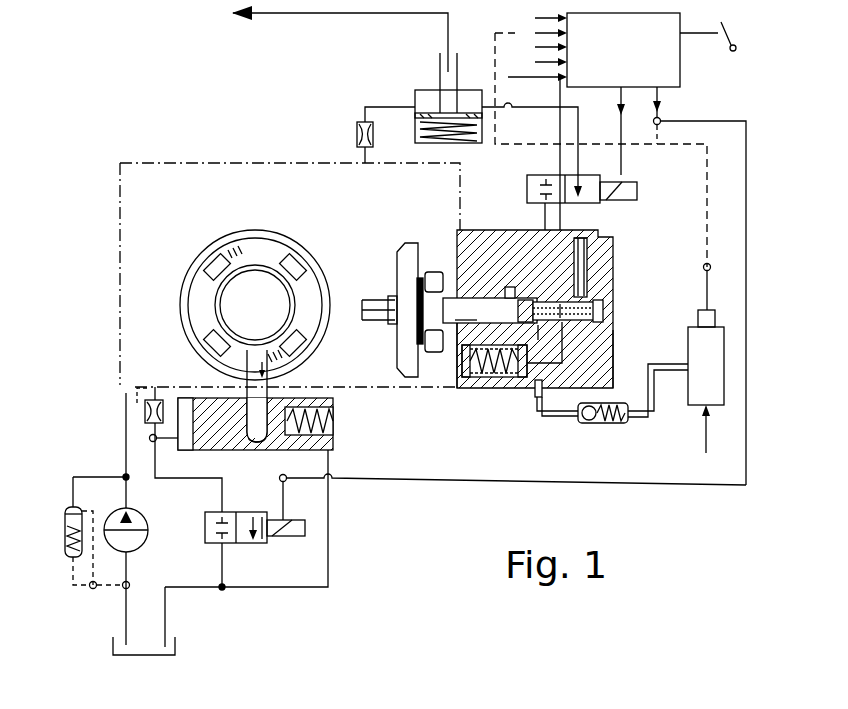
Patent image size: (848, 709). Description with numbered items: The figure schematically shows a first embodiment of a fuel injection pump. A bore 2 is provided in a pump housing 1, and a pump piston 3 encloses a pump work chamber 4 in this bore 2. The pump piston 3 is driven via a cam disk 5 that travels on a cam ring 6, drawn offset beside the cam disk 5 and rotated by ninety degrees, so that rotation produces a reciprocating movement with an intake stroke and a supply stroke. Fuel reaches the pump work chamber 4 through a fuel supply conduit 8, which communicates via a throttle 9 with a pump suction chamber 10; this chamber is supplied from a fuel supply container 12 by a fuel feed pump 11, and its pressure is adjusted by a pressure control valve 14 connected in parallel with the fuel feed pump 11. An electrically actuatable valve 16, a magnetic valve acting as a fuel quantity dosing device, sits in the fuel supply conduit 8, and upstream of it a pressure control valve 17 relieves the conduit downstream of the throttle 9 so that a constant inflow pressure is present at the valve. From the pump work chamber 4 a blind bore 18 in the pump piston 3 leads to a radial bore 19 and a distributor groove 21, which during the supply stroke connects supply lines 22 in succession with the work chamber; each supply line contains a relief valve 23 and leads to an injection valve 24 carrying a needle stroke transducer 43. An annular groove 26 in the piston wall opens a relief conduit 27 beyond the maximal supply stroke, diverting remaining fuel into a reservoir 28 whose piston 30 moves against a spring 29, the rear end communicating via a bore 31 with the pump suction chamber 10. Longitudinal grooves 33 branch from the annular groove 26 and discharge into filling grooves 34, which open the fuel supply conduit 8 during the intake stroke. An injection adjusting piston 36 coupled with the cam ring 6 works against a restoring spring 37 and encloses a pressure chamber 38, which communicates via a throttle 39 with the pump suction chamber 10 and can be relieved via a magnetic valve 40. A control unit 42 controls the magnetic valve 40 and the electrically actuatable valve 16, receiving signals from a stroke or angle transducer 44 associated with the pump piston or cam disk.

The pump housing 1 is at (478, 240).
The bore 2 is at (493, 242).
The pump piston 3 is at (468, 305).
The pump work chamber 4 is at (603, 309).
The cam disk 5 is at (397, 246).
The cam ring 6 is at (290, 253).
The fuel supply conduit 8 is at (587, 240).
The throttle 9 is at (357, 140).
The pump suction chamber 10 is at (235, 213).
The fuel feed pump 11 is at (142, 522).
The fuel supply container 12 is at (176, 642).
The pressure control valve 14 is at (64, 558).
The electrically actuatable valve 16 is at (600, 209).
The pressure control valve 17 is at (415, 95).
The blind bore 18 is at (515, 292).
The radial bore 19 is at (520, 317).
The distributor groove 21 is at (566, 333).
The supply lines 22 is at (553, 417).
The relief valve 23 is at (614, 424).
The injection valve 24 is at (700, 396).
The annular groove 26 is at (546, 272).
The relief conduit 27 is at (600, 381).
The reservoir 28 is at (497, 379).
The spring 29 is at (468, 388).
The piston 30 is at (534, 384).
The bore 31 is at (457, 372).
The longitudinal grooves 33 is at (597, 331).
The filling grooves 34 is at (588, 300).
The injection adjusting piston 36 is at (226, 443).
The restoring spring 37 is at (325, 438).
The pressure chamber 38 is at (183, 399).
The throttle 39 is at (145, 419).
The magnetic valve 40 is at (260, 540).
The control unit 42 is at (668, 70).
The needle stroke transducer 43 is at (712, 318).
The stroke or angle transducer 44 is at (545, 251).